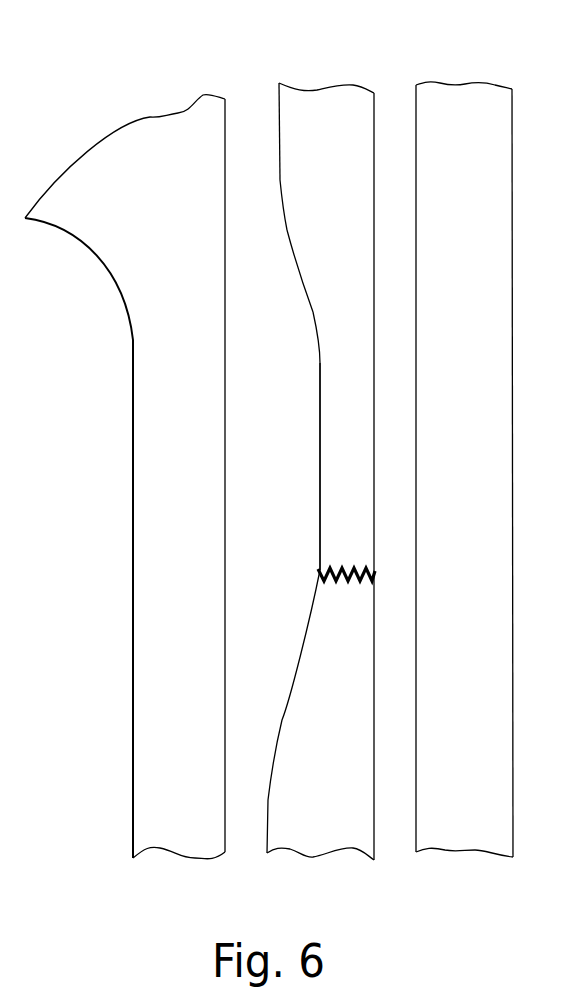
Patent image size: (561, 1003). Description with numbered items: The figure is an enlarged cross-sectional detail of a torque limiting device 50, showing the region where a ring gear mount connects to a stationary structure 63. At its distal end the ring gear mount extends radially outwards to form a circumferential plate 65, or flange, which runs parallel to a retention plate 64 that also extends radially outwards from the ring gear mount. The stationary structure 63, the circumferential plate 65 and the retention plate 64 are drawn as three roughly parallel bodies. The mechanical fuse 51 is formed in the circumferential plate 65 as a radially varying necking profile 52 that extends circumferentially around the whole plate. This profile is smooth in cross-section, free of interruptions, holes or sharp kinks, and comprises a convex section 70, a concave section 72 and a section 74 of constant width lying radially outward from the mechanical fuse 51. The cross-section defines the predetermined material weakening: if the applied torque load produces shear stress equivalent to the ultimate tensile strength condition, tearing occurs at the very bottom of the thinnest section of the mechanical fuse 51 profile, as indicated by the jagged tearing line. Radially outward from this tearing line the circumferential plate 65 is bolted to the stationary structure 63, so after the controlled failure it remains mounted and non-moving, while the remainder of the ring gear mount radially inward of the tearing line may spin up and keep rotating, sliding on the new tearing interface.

The torque limiting device 50 is at (248, 503).
The mechanical fuse 51 is at (350, 588).
The necking profile 52 is at (315, 517).
The stationary structure 63 is at (167, 727).
The retention plate 64 is at (467, 113).
The circumferential plate 65 is at (337, 113).
The convex section 70 is at (287, 230).
The concave section 72 is at (313, 312).
The section with constant width 74 is at (280, 180).